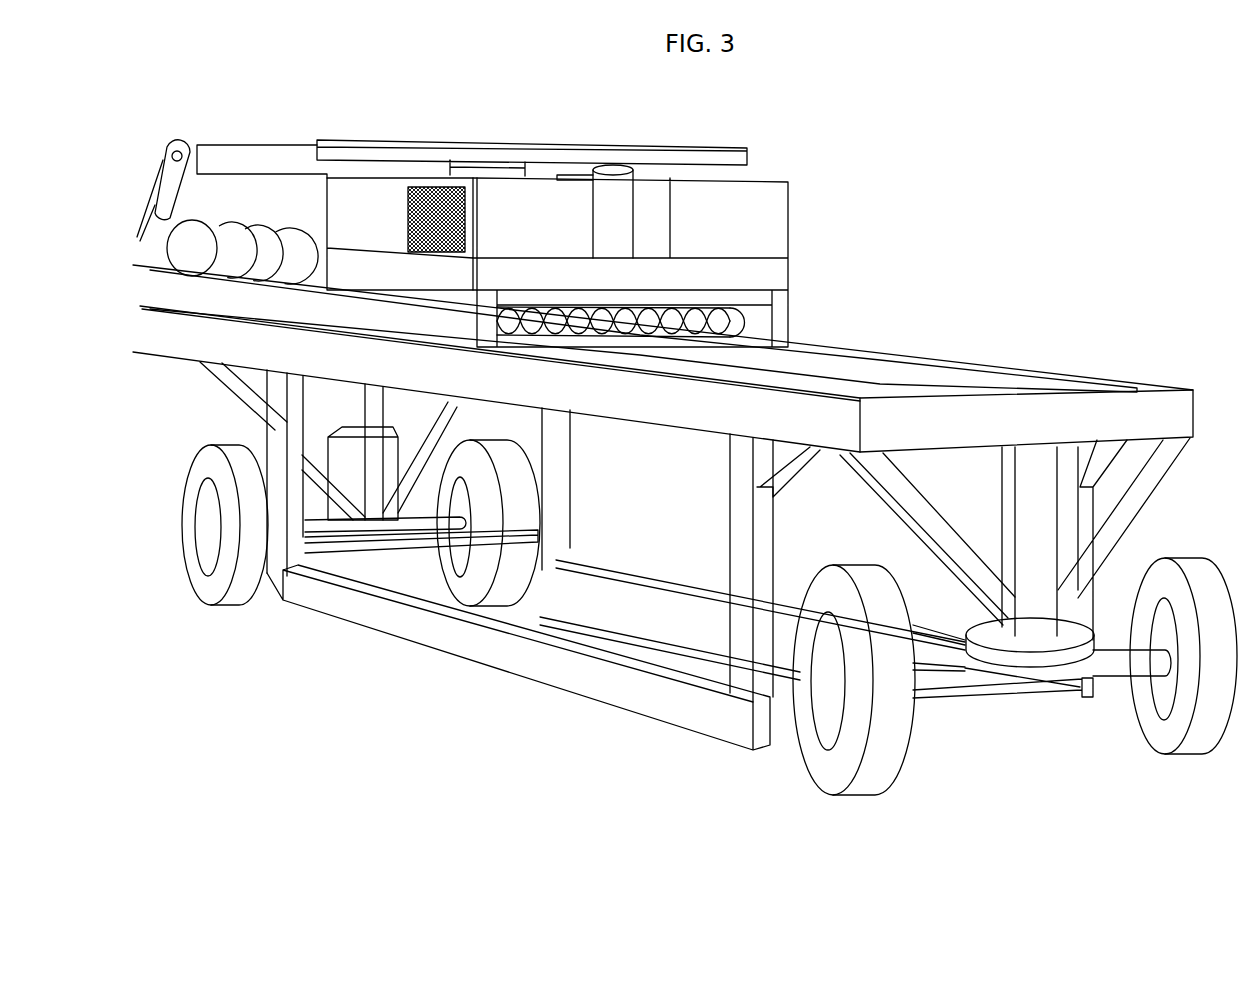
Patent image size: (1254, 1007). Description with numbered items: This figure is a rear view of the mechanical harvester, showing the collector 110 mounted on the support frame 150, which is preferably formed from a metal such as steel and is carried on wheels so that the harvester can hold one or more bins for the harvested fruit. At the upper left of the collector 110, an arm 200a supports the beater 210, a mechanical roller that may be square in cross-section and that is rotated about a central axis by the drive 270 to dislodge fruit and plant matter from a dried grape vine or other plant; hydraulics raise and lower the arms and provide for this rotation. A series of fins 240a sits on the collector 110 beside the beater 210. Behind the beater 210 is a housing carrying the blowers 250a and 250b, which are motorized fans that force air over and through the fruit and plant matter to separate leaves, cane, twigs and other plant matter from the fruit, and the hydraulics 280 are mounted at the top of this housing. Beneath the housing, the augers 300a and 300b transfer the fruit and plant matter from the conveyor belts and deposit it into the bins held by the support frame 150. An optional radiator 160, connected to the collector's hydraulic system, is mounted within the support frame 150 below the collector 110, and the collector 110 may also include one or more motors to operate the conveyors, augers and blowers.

The collector 110 is at (451, 104).
The support frame 150 is at (421, 785).
The radiator 160 is at (327, 437).
The arm 200a is at (148, 193).
The beater 210 is at (238, 145).
The series of fins 240a is at (185, 253).
The blower 250a is at (452, 195).
The blower 250b is at (780, 222).
The drive 270 is at (165, 142).
The hydraulics 280 is at (622, 168).
The auger 300a is at (538, 325).
The auger 300b is at (733, 332).